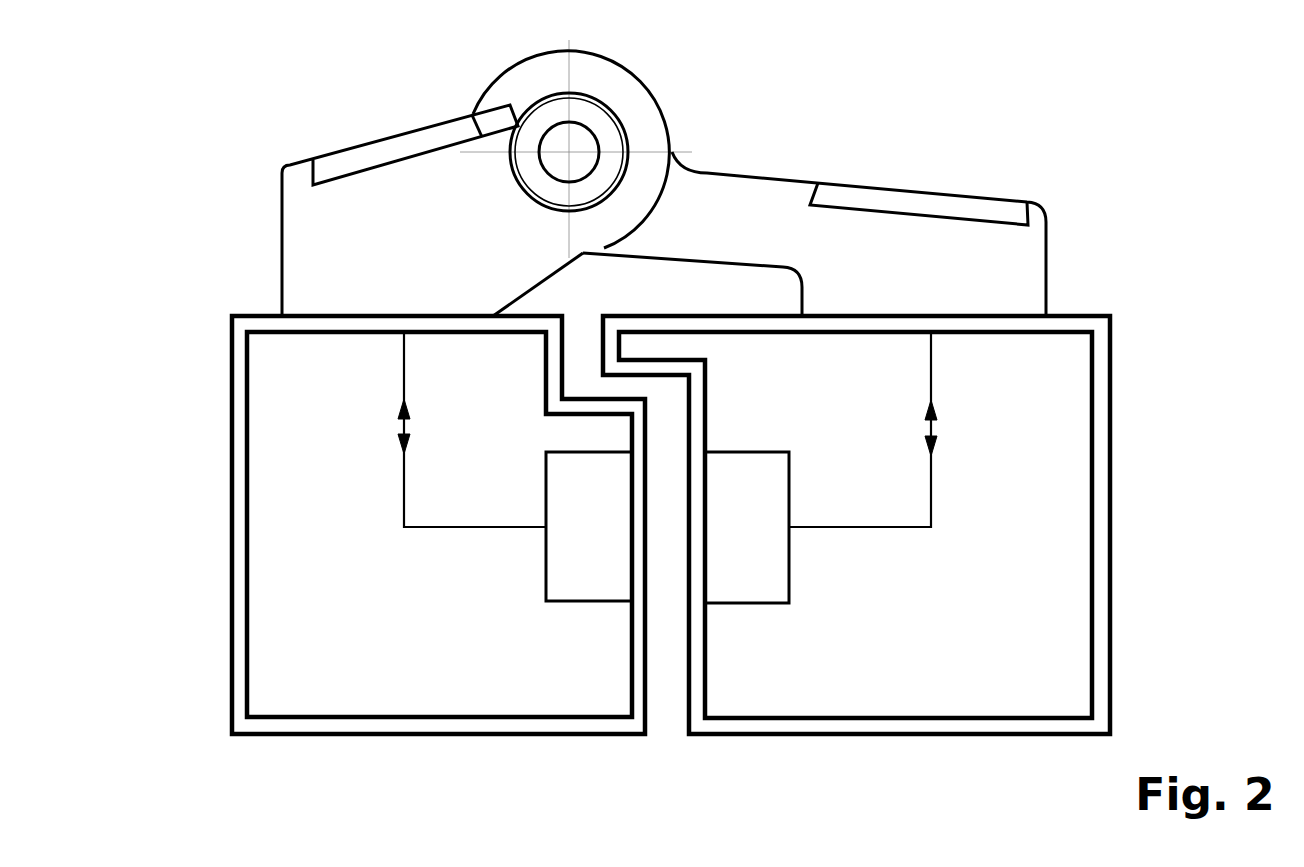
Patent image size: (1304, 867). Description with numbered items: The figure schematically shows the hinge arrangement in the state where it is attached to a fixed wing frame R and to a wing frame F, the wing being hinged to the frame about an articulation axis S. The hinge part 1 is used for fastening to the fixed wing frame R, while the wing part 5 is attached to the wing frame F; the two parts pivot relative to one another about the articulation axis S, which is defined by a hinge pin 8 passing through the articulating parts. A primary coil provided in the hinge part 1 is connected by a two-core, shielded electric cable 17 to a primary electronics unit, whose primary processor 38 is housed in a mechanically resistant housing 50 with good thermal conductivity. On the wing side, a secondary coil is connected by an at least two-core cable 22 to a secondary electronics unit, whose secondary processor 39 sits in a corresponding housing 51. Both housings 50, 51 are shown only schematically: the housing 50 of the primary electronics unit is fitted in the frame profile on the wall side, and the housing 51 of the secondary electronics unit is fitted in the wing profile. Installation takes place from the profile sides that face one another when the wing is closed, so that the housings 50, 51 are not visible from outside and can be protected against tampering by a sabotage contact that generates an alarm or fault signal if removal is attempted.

The hinge part 1 is at (318, 246).
The wing part 5 is at (1013, 267).
The hinge pin 8 is at (585, 147).
The articulation axis S is at (571, 148).
The electric cable 17 is at (404, 491).
The cable 22 is at (931, 491).
The primary processor 38 is at (549, 564).
The secondary processor 39 is at (786, 563).
The housing 50 is at (546, 570).
The housing 51 is at (791, 571).
The fixed wing frame R is at (280, 546).
The wing frame F is at (1060, 547).